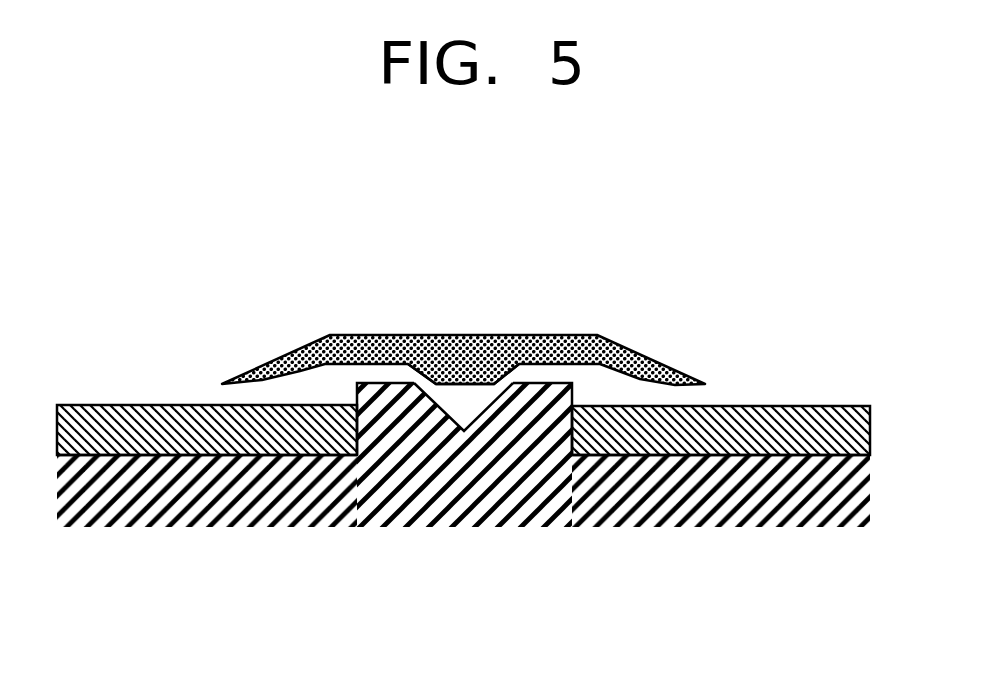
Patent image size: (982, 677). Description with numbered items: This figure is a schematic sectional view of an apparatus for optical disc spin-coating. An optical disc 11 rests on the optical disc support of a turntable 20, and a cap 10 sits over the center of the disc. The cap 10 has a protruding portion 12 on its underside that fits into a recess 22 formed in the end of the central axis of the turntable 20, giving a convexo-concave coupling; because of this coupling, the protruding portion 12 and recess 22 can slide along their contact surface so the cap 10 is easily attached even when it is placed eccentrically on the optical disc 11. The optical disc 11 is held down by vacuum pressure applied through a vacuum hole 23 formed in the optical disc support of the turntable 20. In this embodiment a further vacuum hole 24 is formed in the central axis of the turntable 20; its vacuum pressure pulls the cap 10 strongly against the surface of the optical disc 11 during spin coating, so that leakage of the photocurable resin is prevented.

The cap 10 is at (428, 334).
The optical disc 11 is at (753, 437).
The protruding portion 12 is at (467, 383).
The turntable 20 is at (228, 488).
The recess 22 is at (432, 412).
The vacuum hole 23 is at (612, 483).
The vacuum hole 24 is at (530, 481).